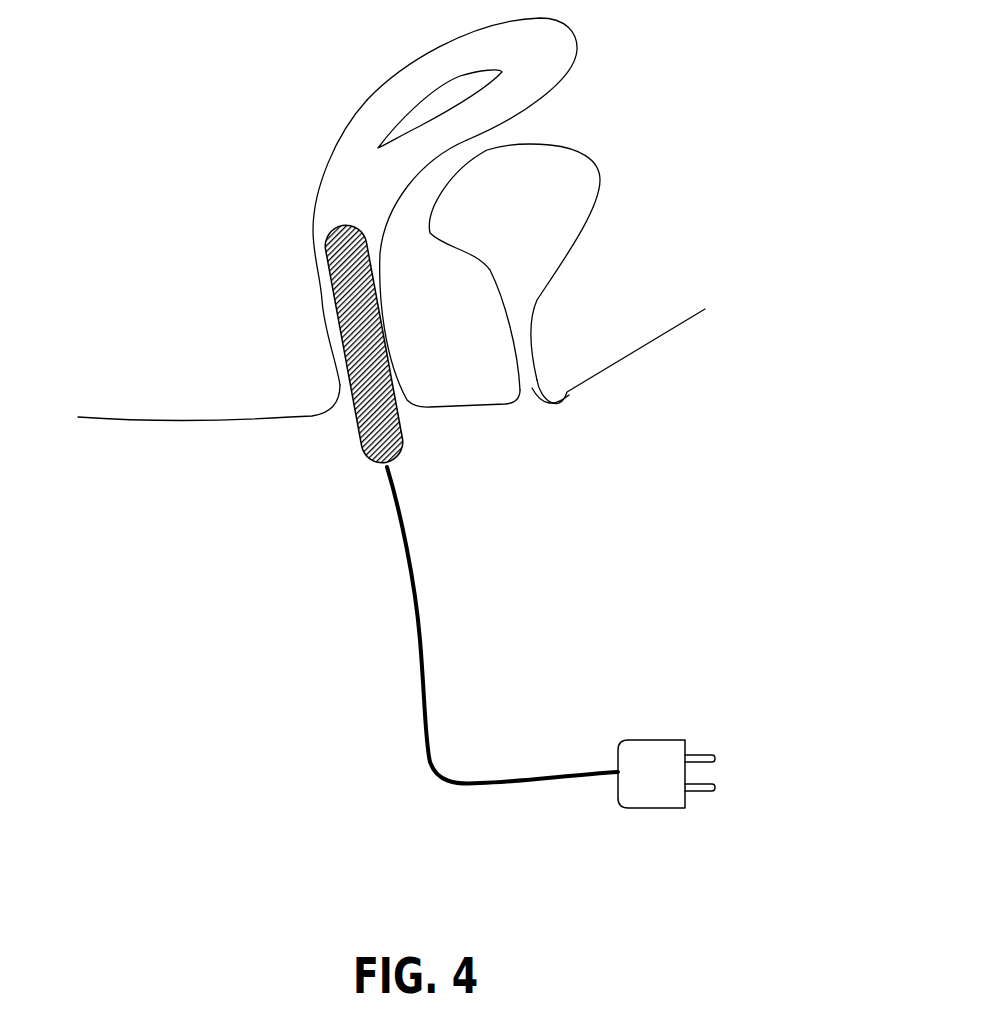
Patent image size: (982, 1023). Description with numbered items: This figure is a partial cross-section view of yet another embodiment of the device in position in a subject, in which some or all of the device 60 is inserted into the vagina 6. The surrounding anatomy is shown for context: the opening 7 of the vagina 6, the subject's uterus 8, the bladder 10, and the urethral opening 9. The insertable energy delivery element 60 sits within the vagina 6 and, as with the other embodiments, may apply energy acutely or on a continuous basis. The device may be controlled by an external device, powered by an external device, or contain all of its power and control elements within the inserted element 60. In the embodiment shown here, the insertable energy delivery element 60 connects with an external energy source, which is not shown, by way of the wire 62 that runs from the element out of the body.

The vagina 6 is at (333, 333).
The opening of the vagina 7 is at (347, 408).
The uterus 8 is at (548, 50).
The urethral opening 9 is at (570, 390).
The bladder 10 is at (573, 193).
The insertable energy delivery element 60 is at (400, 455).
The wire 62 is at (505, 783).